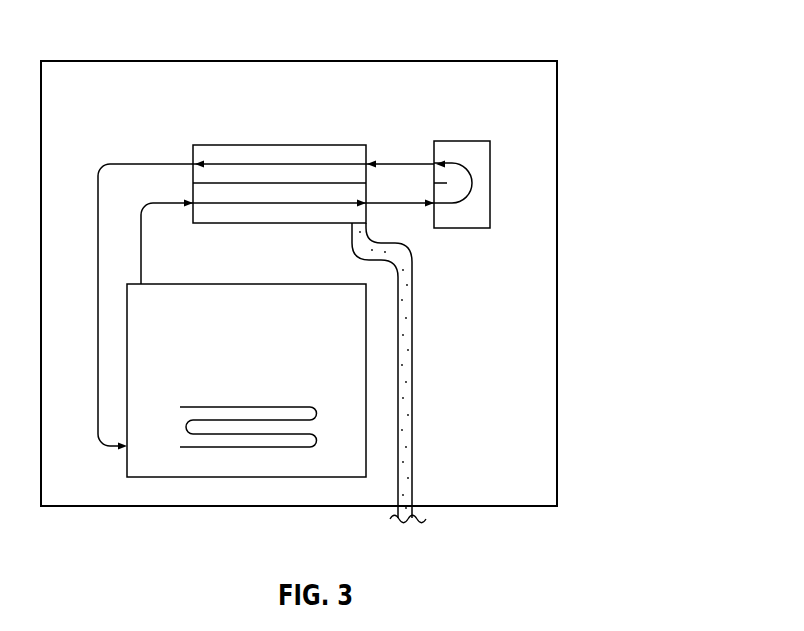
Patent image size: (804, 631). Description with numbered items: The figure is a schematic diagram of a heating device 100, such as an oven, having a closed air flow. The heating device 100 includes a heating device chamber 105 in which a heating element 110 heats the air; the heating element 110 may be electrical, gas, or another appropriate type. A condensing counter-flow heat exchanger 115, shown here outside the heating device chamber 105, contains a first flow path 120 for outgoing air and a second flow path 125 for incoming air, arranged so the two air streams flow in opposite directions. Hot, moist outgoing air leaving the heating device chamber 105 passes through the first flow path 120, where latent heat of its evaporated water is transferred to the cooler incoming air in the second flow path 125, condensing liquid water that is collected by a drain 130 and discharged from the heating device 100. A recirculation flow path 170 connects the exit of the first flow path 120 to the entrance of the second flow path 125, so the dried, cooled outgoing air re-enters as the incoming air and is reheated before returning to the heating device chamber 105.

The heating device 100 is at (110, 42).
The heating device chamber 105 is at (148, 456).
The heating element 110 is at (244, 407).
The condensing counter-flow heat exchanger 115 is at (193, 152).
The first flow path 120 is at (276, 223).
The second flow path 125 is at (276, 145).
The drain 130 is at (413, 400).
The recirculation flow path 170 is at (462, 141).